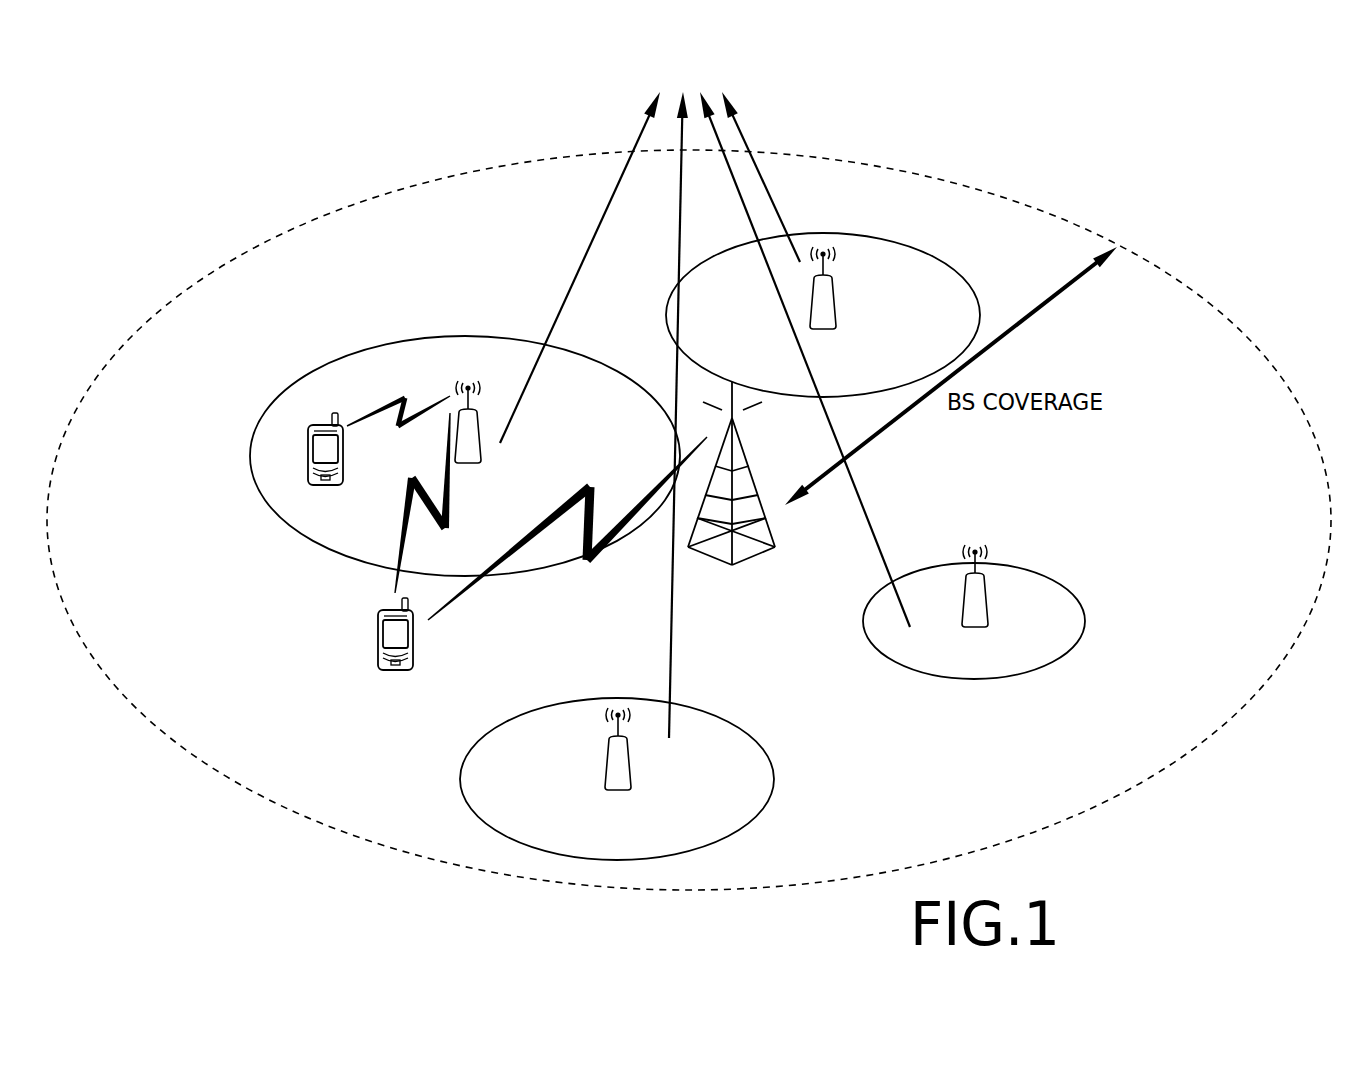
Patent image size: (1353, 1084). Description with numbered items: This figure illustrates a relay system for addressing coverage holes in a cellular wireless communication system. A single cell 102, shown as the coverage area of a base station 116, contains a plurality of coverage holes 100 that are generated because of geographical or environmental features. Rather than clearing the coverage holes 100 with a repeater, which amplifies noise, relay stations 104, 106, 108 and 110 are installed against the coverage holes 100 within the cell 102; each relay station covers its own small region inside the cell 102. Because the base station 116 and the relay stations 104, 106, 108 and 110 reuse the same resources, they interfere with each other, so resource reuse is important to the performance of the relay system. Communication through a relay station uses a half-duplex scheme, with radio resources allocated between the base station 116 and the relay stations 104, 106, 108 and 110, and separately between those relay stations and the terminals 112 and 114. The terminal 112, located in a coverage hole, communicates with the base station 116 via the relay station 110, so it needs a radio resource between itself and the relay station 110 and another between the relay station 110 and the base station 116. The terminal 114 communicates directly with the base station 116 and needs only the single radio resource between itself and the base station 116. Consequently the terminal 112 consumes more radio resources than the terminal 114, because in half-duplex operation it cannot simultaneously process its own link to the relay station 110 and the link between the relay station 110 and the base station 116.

The coverage hole 100 is at (705, 398).
The cell 102 is at (1272, 373).
The relay station (RS1) 104 is at (823, 315).
The relay station (RS2) 106 is at (974, 612).
The relay station (RS3) 108 is at (617, 779).
The relay station (RS4) 110 is at (465, 456).
The terminal 112 is at (373, 455).
The terminal 114 is at (537, 555).
The base station (BS) 116 is at (739, 492).